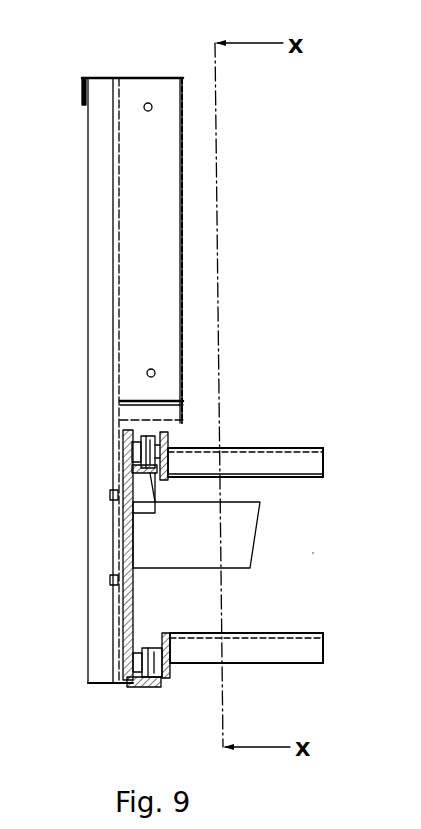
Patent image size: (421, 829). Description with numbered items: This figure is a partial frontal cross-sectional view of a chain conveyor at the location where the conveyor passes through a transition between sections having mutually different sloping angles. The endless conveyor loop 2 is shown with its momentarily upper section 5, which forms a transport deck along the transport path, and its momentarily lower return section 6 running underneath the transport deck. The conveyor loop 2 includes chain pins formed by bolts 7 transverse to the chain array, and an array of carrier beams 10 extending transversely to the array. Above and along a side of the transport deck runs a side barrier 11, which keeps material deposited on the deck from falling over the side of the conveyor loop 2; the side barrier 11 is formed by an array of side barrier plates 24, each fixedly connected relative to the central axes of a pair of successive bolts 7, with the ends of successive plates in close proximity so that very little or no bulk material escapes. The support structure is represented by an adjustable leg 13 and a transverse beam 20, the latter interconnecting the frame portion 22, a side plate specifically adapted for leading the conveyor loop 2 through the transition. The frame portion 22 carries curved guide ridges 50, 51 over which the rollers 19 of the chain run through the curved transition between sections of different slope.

The conveyor loop 2 is at (279, 493).
The upper section 5 is at (262, 432).
The lower return section 6 is at (305, 666).
The bolt 7 is at (92, 549).
The carrier beam 10 is at (332, 555).
The side barrier 11 is at (200, 380).
The adjustable leg 13 is at (88, 543).
The roller 19 is at (97, 510).
The transverse beam 20 is at (240, 568).
The frame portion 22 is at (134, 604).
The side barrier plate 24 is at (175, 721).
The curved guide ridge 50 is at (133, 513).
The curved guide ridge 51 is at (147, 688).